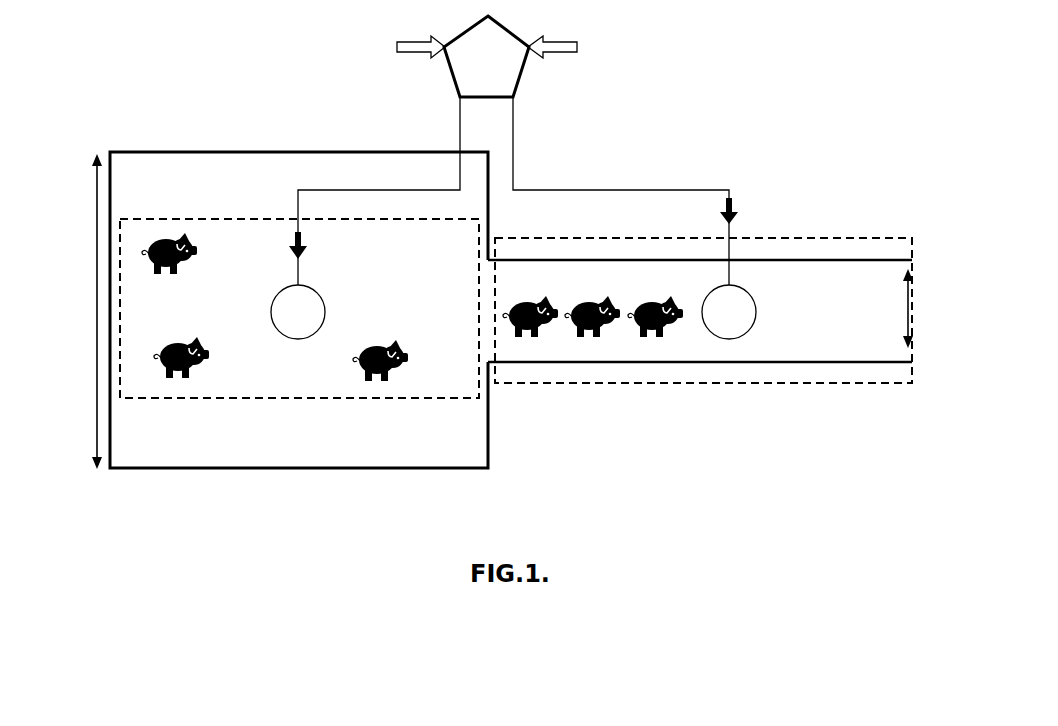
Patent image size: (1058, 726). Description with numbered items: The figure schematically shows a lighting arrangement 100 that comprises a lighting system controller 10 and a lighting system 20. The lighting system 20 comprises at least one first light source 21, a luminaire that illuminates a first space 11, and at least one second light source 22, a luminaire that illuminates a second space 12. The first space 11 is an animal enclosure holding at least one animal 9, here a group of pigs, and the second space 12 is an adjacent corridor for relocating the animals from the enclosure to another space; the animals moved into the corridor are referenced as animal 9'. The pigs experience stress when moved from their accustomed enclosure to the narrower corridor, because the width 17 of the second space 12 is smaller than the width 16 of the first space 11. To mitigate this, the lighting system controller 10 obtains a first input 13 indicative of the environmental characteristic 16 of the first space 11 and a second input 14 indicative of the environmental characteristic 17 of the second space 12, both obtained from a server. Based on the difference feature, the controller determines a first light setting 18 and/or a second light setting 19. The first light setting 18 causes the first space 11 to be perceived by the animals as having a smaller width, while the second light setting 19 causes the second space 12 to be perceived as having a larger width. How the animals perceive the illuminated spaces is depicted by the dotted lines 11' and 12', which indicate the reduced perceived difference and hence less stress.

The lighting arrangement 100 is at (196, 38).
The lighting system controller 10 is at (444, 76).
The first input 13 is at (430, 40).
The second input 14 is at (562, 52).
The lighting system 20 is at (337, 288).
The first space 11 is at (337, 310).
The perceived first space 11' is at (299, 335).
The animal 9 is at (275, 307).
The environmental characteristic of the first space 16 is at (96, 309).
The first light setting 18 is at (302, 240).
The first light source 21 is at (298, 312).
The second light setting 19 is at (733, 204).
The second light source 22 is at (729, 312).
The second space 12 is at (700, 353).
The perceived second space 12' is at (703, 338).
The animal moved to the second space 9' is at (593, 298).
The environmental characteristic of the second space 17 is at (912, 316).